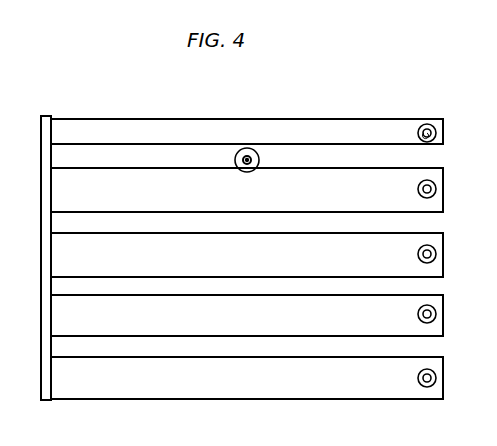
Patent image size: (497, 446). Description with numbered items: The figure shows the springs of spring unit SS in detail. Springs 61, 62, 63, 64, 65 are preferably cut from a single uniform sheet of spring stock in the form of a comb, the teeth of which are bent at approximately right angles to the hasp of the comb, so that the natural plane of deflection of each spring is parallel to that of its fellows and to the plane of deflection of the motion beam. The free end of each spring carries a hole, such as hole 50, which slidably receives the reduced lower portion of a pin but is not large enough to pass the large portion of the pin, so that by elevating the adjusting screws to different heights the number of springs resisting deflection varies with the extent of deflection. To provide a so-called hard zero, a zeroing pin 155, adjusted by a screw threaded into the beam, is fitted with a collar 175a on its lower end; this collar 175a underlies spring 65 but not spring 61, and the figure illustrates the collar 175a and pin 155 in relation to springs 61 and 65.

The hole 50 is at (432, 143).
The spring 61 is at (210, 135).
The spring 62 is at (208, 388).
The spring 63 is at (215, 325).
The spring 64 is at (211, 270).
The spring 65 is at (210, 202).
The zeroing pin 155 is at (235, 163).
The collar 175a is at (260, 157).